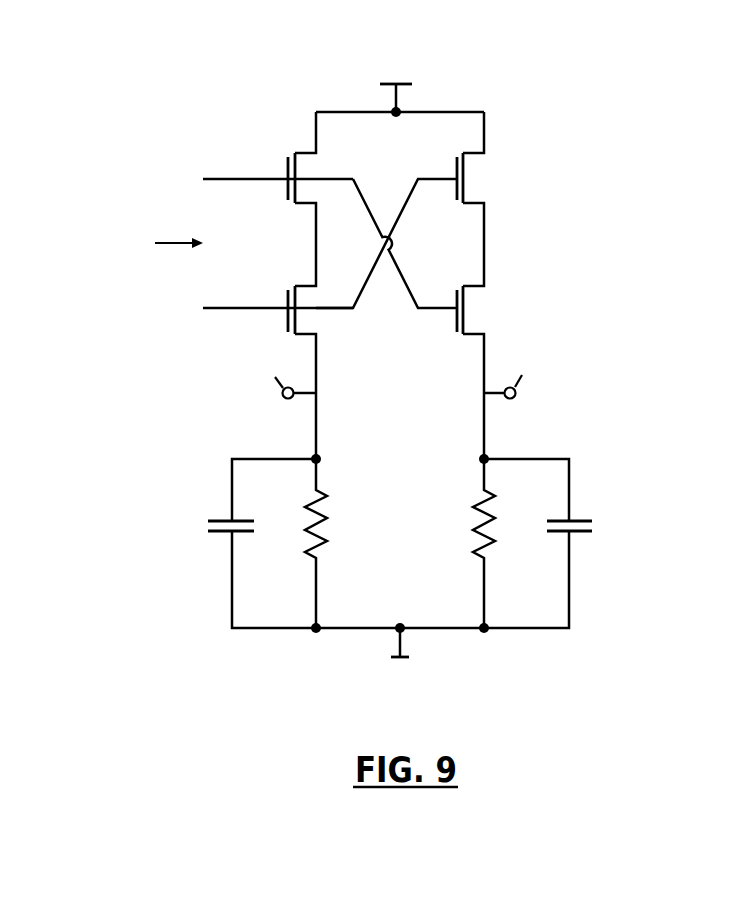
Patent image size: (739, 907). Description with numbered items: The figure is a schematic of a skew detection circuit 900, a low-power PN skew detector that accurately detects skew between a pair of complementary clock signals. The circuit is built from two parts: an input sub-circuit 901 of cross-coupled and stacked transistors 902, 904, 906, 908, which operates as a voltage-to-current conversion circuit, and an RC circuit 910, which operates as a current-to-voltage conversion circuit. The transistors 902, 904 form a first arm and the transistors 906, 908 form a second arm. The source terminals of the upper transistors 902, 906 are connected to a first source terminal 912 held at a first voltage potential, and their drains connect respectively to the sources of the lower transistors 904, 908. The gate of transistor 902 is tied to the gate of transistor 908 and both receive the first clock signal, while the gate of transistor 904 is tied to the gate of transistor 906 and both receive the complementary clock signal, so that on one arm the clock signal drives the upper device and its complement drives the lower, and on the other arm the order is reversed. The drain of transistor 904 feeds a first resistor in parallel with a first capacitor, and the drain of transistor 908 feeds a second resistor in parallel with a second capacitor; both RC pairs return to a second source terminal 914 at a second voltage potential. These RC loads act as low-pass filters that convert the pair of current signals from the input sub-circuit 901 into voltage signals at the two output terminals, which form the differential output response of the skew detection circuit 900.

The skew detection circuit 900 is at (167, 49).
The input sub-circuit 901 is at (517, 139).
The transistor 902 is at (300, 152).
The transistor 904 is at (302, 285).
The transistor 906 is at (465, 167).
The transistor 908 is at (465, 295).
The RC circuit 910 is at (199, 454).
The first source terminal 912 is at (412, 84).
The second source terminal 914 is at (408, 657).